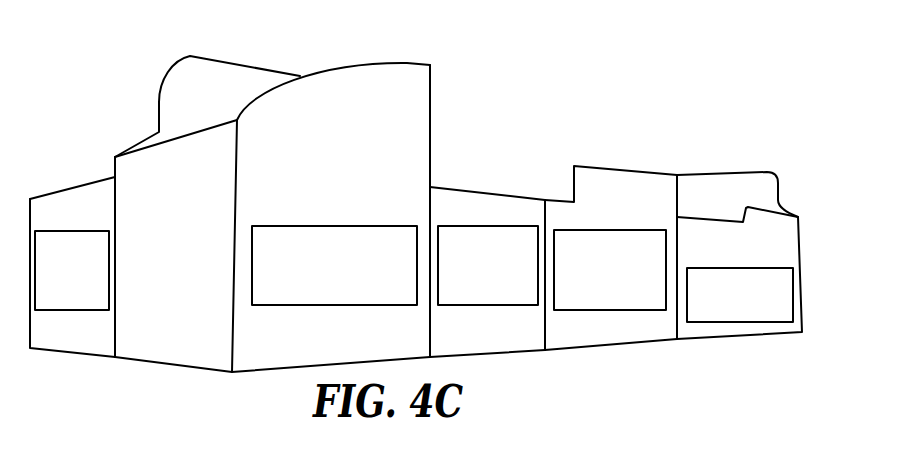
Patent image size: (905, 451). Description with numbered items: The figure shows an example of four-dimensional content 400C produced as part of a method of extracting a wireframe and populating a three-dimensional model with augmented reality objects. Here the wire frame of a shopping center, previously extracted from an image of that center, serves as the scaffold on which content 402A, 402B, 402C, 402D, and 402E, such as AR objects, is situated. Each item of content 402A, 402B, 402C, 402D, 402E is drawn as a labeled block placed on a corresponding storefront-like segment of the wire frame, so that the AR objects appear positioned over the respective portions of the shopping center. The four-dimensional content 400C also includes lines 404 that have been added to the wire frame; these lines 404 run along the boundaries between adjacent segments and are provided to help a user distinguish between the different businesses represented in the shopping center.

The 4D content 400C is at (682, 52).
The content 402A is at (72, 267).
The content 402B is at (272, 214).
The content 402C is at (487, 272).
The content 402D is at (611, 258).
The content 402E is at (739, 255).
The lines 404 is at (115, 213).